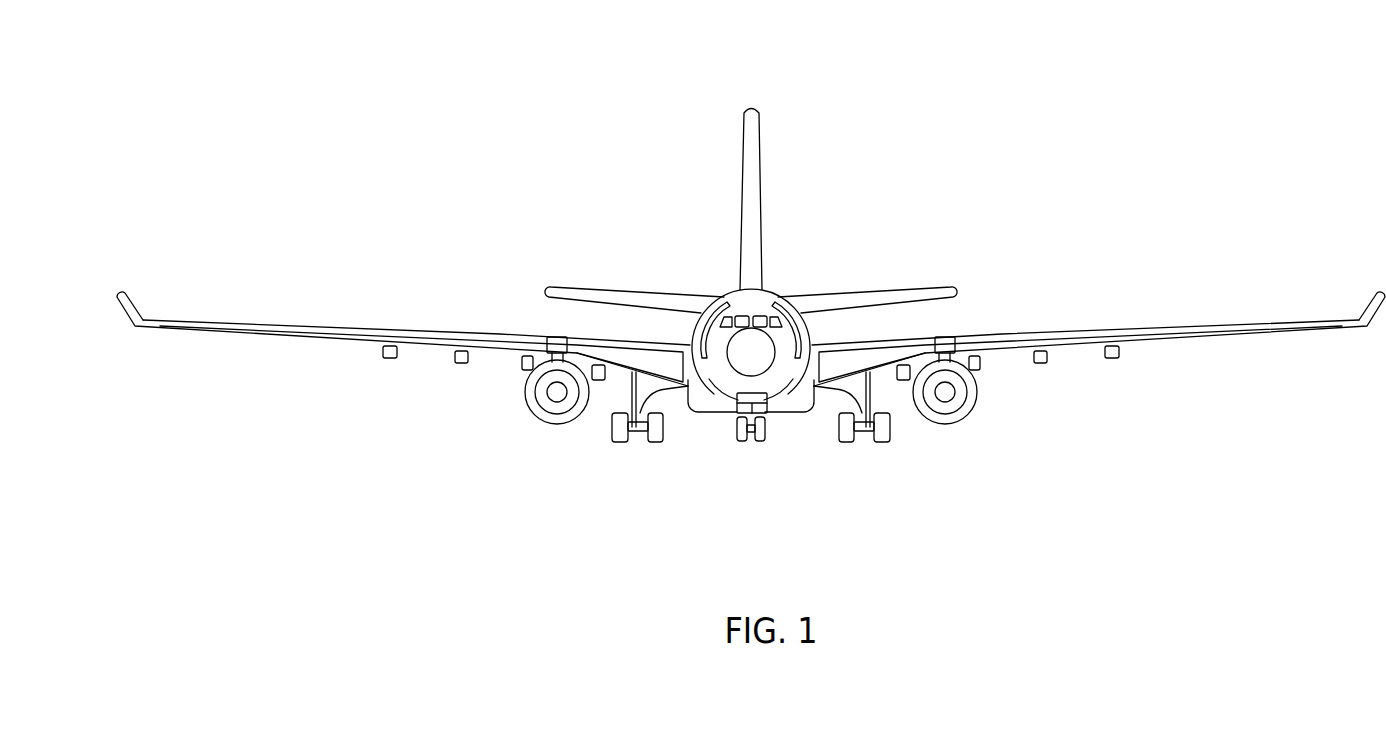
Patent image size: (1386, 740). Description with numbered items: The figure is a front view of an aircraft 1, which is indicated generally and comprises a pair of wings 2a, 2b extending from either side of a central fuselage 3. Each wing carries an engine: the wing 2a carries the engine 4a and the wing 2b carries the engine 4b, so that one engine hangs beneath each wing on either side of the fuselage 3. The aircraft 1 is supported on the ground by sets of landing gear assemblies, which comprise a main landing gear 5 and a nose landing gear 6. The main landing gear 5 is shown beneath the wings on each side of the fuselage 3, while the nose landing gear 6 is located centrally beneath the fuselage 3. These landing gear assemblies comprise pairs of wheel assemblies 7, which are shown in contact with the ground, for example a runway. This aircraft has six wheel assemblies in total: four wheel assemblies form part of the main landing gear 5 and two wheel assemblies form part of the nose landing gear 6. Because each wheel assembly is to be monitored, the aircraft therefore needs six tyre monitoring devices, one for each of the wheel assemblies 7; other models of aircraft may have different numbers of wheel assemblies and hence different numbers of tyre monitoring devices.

The aircraft 1 is at (352, 127).
The wing 2a is at (264, 322).
The wing 2b is at (1238, 322).
The fuselage 3 is at (731, 290).
The engine 4a is at (526, 394).
The engine 4b is at (976, 394).
The main landing gear 5 is at (612, 428).
The nose landing gear 6 is at (743, 443).
The wheel assemblies 7 is at (739, 441).